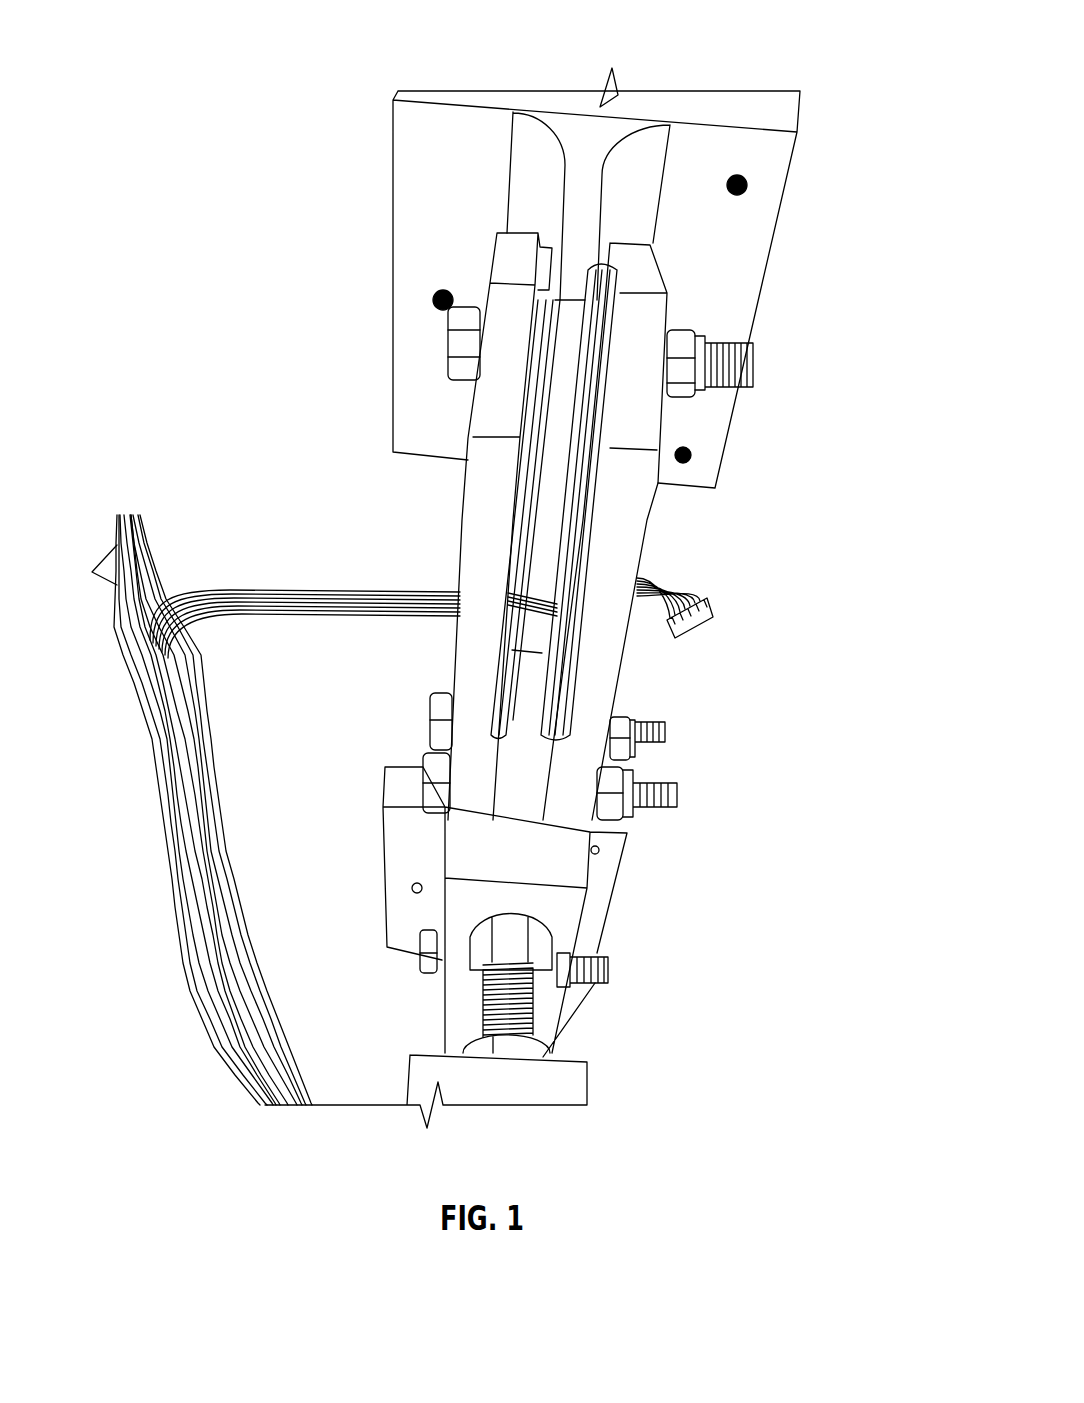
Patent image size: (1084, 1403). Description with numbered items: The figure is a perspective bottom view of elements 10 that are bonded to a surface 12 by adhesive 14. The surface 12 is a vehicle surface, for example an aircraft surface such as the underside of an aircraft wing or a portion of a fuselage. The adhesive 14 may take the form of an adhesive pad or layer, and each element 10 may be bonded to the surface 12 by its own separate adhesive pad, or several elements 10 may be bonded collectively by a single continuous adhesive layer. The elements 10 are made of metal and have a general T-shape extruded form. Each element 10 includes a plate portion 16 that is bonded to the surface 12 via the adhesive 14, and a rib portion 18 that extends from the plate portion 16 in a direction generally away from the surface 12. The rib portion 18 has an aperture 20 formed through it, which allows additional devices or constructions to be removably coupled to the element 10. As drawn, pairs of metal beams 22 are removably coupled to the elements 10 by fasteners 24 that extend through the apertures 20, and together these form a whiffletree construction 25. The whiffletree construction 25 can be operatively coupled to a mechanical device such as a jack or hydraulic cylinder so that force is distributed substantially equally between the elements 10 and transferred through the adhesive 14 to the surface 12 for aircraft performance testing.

The element 10 is at (785, 240).
The surface 12 is at (280, 142).
The adhesive 14 is at (406, 753).
The plate portion 16 is at (753, 148).
The rib portion 18 is at (587, 183).
The aperture 20 is at (590, 355).
The metal beams 22 is at (483, 507).
The fasteners 24 is at (445, 348).
The whiffletree construction 25 is at (664, 716).